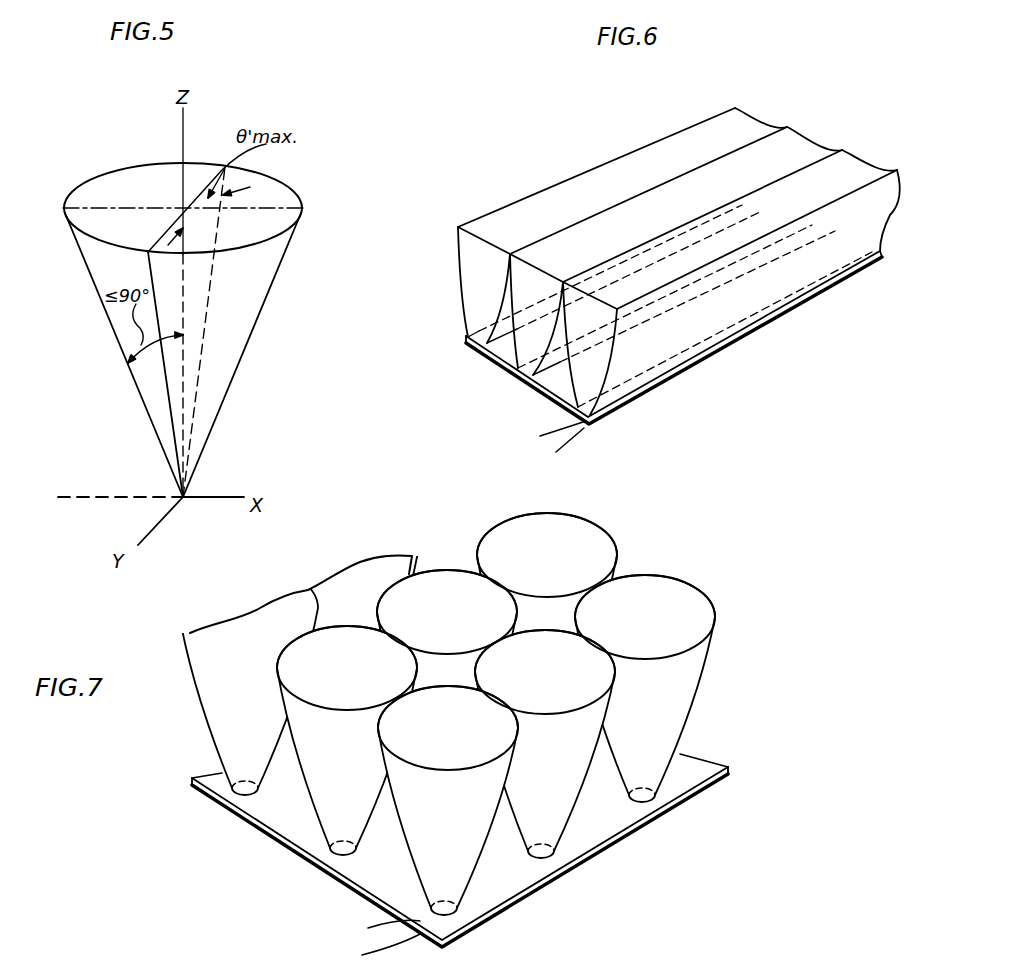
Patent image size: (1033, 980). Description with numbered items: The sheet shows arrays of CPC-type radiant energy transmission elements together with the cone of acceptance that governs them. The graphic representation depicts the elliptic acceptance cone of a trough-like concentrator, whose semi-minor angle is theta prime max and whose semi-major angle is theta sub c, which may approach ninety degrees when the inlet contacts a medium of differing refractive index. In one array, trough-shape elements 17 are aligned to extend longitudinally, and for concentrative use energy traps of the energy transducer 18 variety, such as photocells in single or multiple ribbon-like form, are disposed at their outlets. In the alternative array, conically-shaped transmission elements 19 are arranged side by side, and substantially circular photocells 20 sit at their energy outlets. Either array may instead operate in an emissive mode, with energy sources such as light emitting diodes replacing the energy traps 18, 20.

In FIG. 6, the trough-shape elements 17 is at (471, 290).
In FIG. 6, the energy transducer 18 is at (466, 340).
In FIG. 7, the conically-shaped transmission elements 19 is at (669, 704).
In FIG. 7, the photocells 20 is at (438, 936).